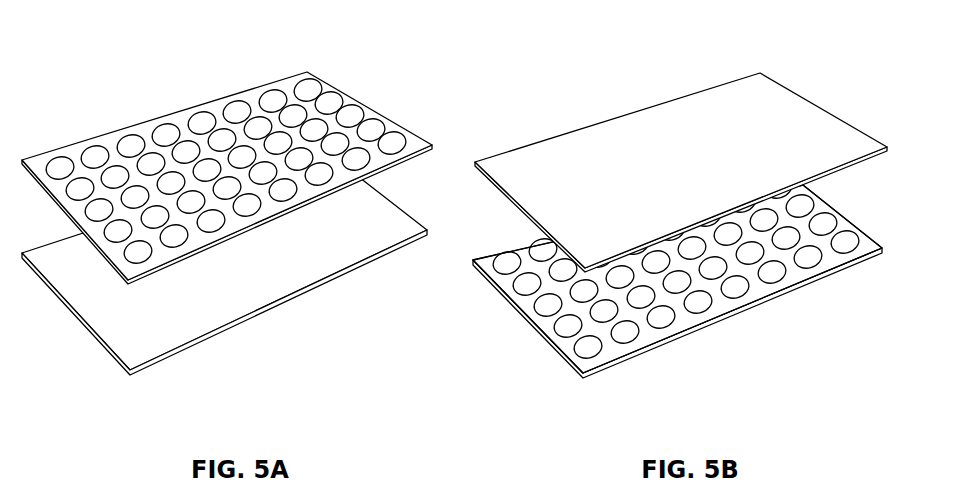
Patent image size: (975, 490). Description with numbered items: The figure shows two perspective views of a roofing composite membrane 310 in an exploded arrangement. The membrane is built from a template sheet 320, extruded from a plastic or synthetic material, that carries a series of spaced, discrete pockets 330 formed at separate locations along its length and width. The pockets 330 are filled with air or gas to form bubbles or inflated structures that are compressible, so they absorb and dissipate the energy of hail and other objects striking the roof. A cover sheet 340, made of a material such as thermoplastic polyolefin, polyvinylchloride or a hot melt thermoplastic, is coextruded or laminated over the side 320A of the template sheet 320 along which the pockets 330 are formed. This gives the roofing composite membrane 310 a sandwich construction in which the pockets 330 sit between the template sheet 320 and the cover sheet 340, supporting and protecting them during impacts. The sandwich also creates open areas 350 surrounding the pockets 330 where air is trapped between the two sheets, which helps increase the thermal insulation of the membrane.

In FIG. 5A, the roofing composite membrane 310 is at (260, 200).
In FIG. 5B, the roofing composite membrane 310 is at (687, 221).
In FIG. 5A, the template sheet 320 is at (262, 155).
In FIG. 5B, the template sheet 320 is at (687, 284).
In FIG. 5A, the side of the template sheet 320A is at (413, 146).
In FIG. 5B, the side of the template sheet 320A is at (838, 227).
In FIG. 5A, the pockets 330 is at (320, 105).
In FIG. 5B, the pockets 330 is at (587, 347).
In FIG. 5A, the cover sheet 340 is at (304, 301).
In FIG. 5B, the cover sheet 340 is at (770, 97).
In FIG. 5B, the open areas 350 is at (660, 298).